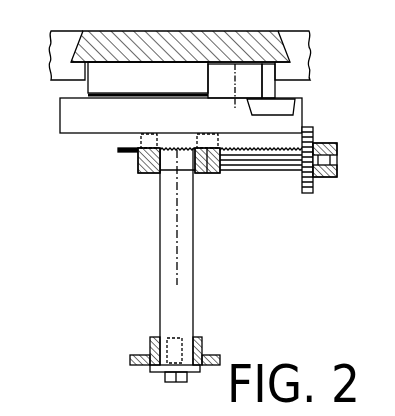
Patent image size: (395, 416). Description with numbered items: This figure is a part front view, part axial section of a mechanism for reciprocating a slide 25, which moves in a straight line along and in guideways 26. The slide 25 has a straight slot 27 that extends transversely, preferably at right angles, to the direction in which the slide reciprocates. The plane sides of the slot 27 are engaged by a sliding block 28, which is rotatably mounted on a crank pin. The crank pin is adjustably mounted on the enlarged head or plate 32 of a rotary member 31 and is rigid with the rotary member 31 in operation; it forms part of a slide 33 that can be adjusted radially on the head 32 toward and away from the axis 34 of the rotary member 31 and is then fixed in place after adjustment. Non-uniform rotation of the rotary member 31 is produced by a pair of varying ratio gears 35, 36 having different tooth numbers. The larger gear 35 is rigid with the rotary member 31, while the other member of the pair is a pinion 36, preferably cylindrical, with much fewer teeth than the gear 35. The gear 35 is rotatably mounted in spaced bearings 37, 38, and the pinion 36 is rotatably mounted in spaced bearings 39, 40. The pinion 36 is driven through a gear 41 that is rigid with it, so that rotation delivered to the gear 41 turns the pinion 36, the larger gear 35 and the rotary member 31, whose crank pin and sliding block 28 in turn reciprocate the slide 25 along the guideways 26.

The slide 25 is at (228, 32).
The guideways 26 is at (288, 42).
The straight slot 27 is at (150, 75).
The sliding block 28 is at (257, 78).
The rotary member 31 is at (163, 252).
The enlarged head or plate 32 is at (67, 115).
The slide 33 is at (272, 104).
The axis 34 is at (178, 240).
The larger gear 35 is at (275, 143).
The pinion 36 is at (285, 160).
The bearing 37 is at (142, 166).
The bearing 38 is at (200, 343).
The bearing 39 is at (212, 173).
The bearing 40 is at (325, 177).
The gear 41 is at (308, 135).